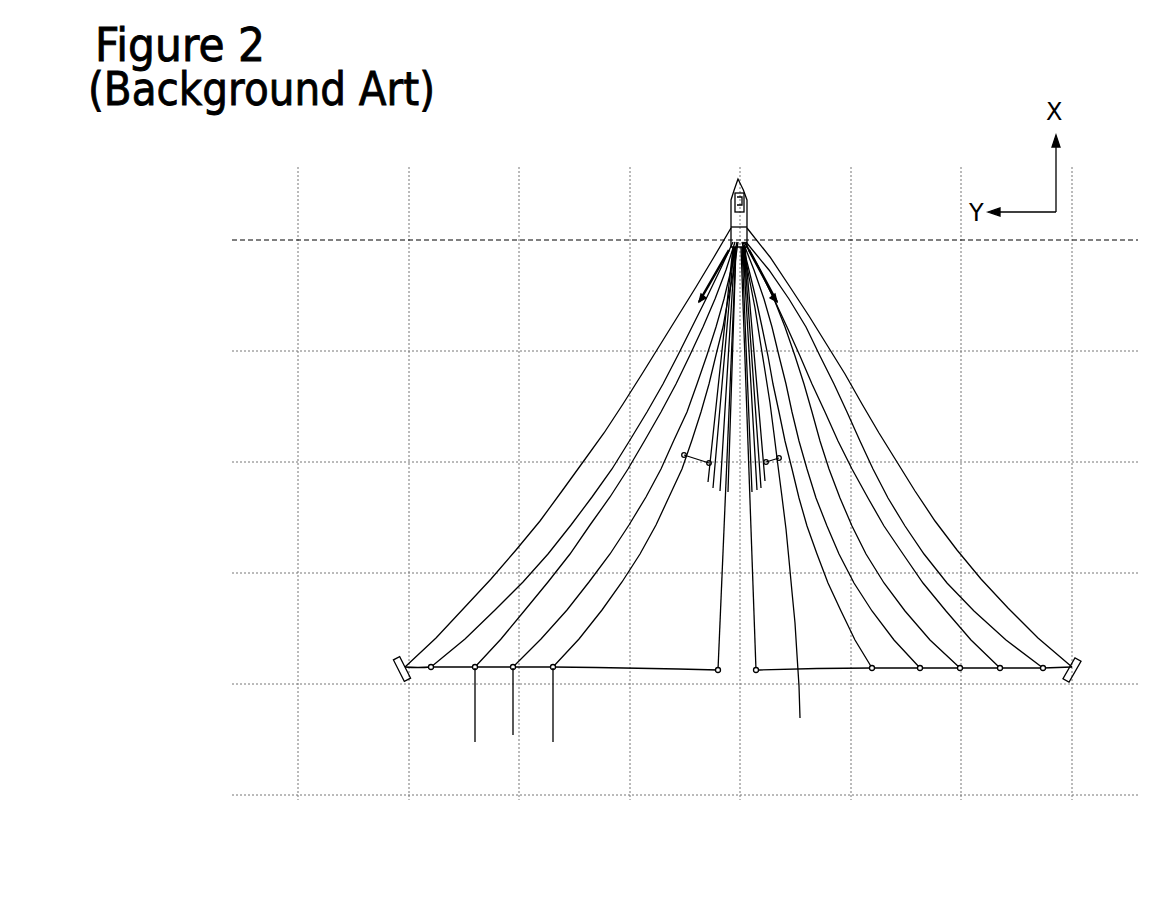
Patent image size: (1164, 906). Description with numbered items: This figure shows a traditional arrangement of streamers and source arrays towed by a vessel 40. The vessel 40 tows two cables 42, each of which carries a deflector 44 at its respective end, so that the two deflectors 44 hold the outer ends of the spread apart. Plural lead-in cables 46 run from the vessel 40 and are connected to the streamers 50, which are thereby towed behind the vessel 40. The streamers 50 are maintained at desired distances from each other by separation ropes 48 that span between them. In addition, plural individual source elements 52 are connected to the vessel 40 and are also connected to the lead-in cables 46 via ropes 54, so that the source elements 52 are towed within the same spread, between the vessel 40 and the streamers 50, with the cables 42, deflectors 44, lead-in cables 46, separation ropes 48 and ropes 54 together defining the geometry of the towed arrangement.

The vessel 40 is at (782, 193).
The cables 42 is at (597, 434).
The deflectors 44 is at (405, 668).
The lead-in cables 46 is at (930, 553).
The separation ropes 48 is at (886, 669).
The streamers 50 is at (553, 716).
The individual source elements 52 is at (752, 445).
The ropes 54 is at (780, 497).